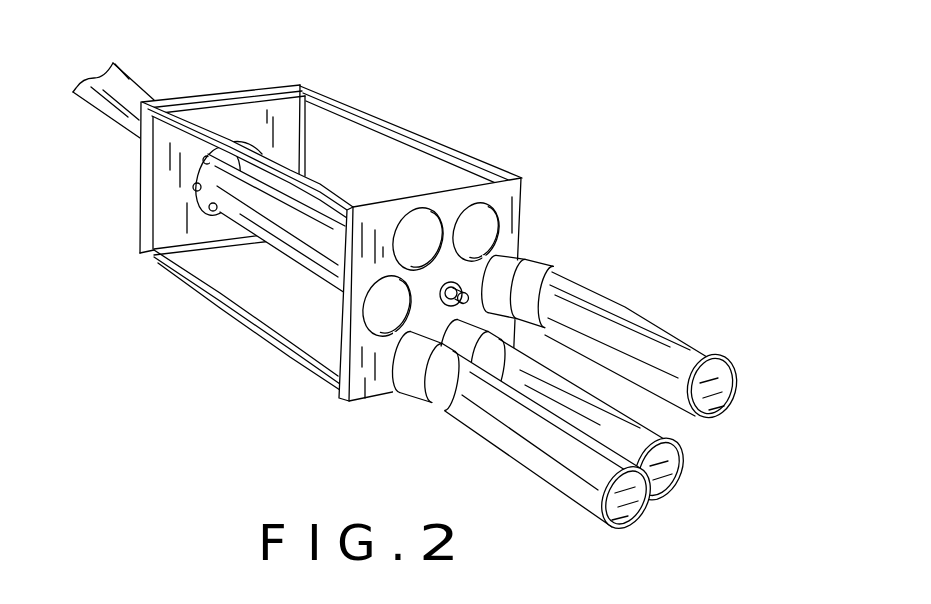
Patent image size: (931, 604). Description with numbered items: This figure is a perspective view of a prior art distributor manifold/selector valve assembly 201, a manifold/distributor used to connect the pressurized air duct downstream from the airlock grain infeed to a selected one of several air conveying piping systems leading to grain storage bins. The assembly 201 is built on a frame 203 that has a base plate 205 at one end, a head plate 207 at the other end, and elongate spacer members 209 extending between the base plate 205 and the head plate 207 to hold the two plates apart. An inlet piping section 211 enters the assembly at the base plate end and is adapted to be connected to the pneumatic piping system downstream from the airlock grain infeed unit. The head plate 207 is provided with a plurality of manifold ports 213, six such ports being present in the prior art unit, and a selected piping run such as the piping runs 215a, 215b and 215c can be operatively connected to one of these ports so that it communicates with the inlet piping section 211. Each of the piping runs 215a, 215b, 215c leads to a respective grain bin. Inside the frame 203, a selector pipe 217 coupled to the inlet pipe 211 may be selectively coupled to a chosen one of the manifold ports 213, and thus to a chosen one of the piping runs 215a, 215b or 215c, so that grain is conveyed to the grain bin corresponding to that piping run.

The distributor manifold/selector valve assembly 201 is at (372, 98).
The frame 203 is at (231, 327).
The base plate 205 is at (171, 207).
The head plate 207 is at (512, 203).
The elongate spacer members 209 is at (427, 140).
The inlet piping section 211 is at (131, 70).
The manifold ports 213 is at (384, 320).
The piping run 215a is at (588, 470).
The piping run 215b is at (625, 432).
The piping run 215c is at (637, 343).
The selector pipe 217 is at (289, 219).